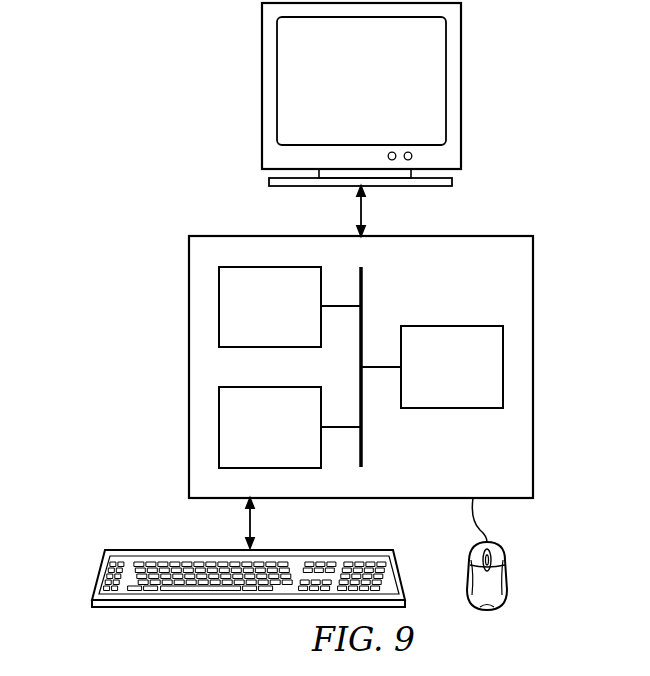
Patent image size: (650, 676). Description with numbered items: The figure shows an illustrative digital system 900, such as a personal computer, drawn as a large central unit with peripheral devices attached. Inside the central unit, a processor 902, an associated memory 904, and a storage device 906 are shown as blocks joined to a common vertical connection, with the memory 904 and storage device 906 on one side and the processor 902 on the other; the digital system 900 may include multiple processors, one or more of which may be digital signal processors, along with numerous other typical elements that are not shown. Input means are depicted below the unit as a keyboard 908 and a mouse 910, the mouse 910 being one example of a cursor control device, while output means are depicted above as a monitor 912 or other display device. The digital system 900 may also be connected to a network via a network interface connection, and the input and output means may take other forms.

The digital system 900 is at (157, 82).
The processor 902 is at (434, 379).
The memory 904 is at (252, 319).
The storage device 906 is at (252, 440).
The keyboard 908 is at (95, 575).
The mouse 910 is at (507, 578).
The monitor 912 is at (461, 85).